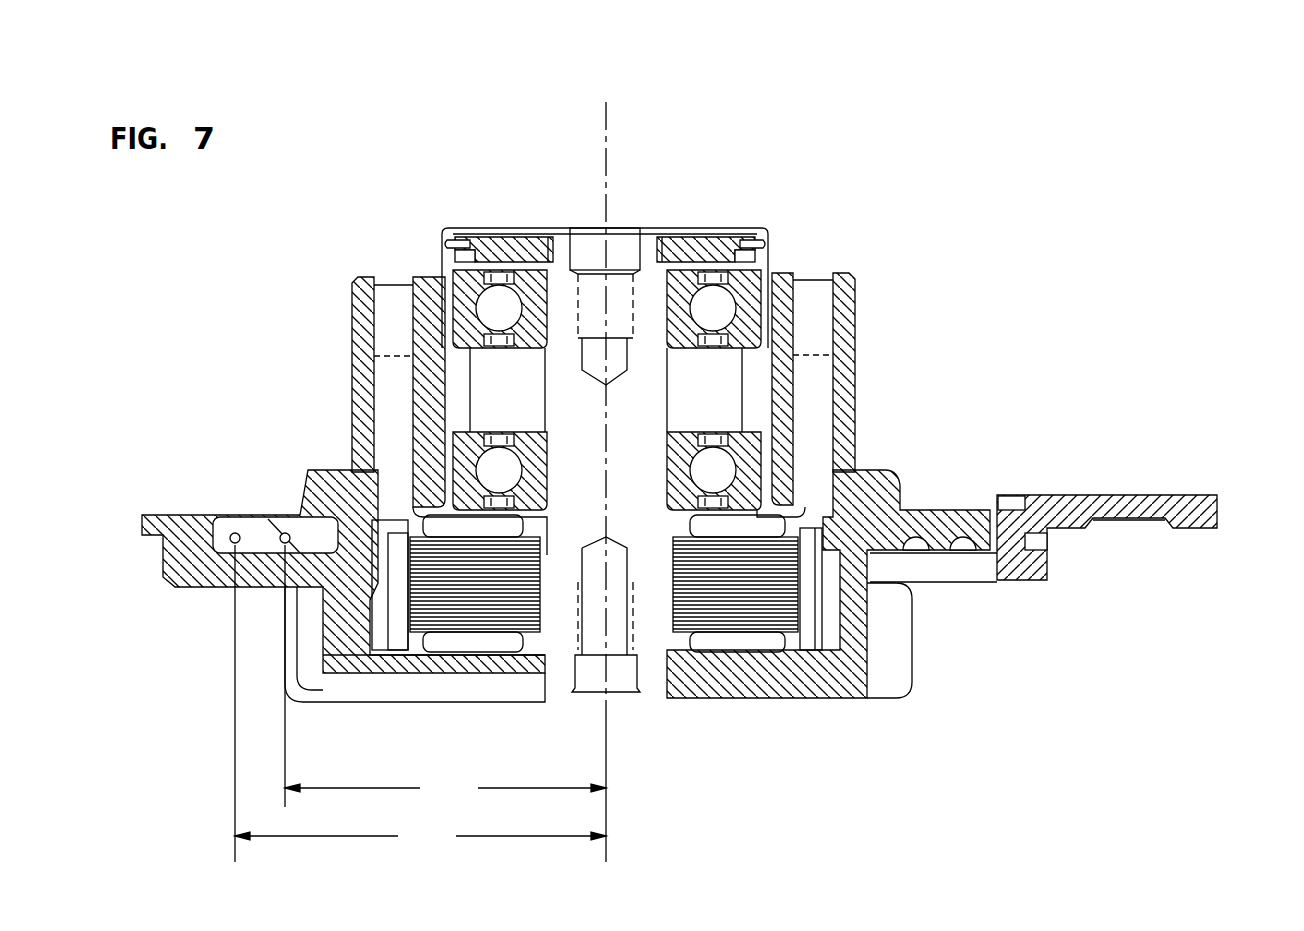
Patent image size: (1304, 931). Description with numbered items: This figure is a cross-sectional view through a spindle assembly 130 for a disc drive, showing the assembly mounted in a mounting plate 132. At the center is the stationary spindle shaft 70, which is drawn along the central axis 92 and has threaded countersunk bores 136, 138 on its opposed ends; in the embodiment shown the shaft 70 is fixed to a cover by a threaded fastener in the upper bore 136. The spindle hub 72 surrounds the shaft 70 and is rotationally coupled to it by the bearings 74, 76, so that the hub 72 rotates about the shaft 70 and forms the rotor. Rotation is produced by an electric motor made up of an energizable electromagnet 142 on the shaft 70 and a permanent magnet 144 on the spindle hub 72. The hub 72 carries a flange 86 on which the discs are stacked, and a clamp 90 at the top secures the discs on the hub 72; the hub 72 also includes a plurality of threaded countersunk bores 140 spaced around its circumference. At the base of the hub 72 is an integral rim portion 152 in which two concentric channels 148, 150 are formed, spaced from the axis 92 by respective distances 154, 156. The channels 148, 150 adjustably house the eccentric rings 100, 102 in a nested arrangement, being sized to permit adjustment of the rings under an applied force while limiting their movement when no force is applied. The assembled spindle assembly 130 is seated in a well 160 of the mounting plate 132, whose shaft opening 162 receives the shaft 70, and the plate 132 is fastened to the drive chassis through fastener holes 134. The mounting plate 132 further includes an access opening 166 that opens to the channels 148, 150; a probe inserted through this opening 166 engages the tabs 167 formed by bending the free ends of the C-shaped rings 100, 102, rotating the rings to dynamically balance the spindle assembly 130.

The spindle shaft 70 is at (640, 447).
The spindle hub 72 is at (588, 324).
The bearing 74 is at (725, 268).
The bearing 76 is at (757, 438).
The flange 86 is at (335, 549).
The clamp 90 is at (523, 233).
The axis 92 is at (608, 152).
The eccentric ring 100 is at (214, 586).
The eccentric ring 102 is at (232, 528).
The spindle assembly 130 is at (687, 207).
The mounting plate 132 is at (1141, 491).
The fastener holes 134 is at (1125, 492).
The threaded countersunk bore 136 is at (592, 237).
The threaded countersunk bore 138 is at (627, 692).
The threaded countersunk bores 140 is at (395, 275).
The energizable electromagnet 142 is at (856, 556).
The permanent magnet 144 is at (818, 540).
The channel 148 is at (298, 542).
The channel 150 is at (248, 540).
The integral rim portion 152 is at (231, 549).
The distance 154 is at (445, 676).
The distance 156 is at (420, 703).
The well 160 is at (830, 700).
The shaft opening 162 is at (548, 700).
The access opening 166 is at (993, 583).
The tab 167 is at (947, 557).